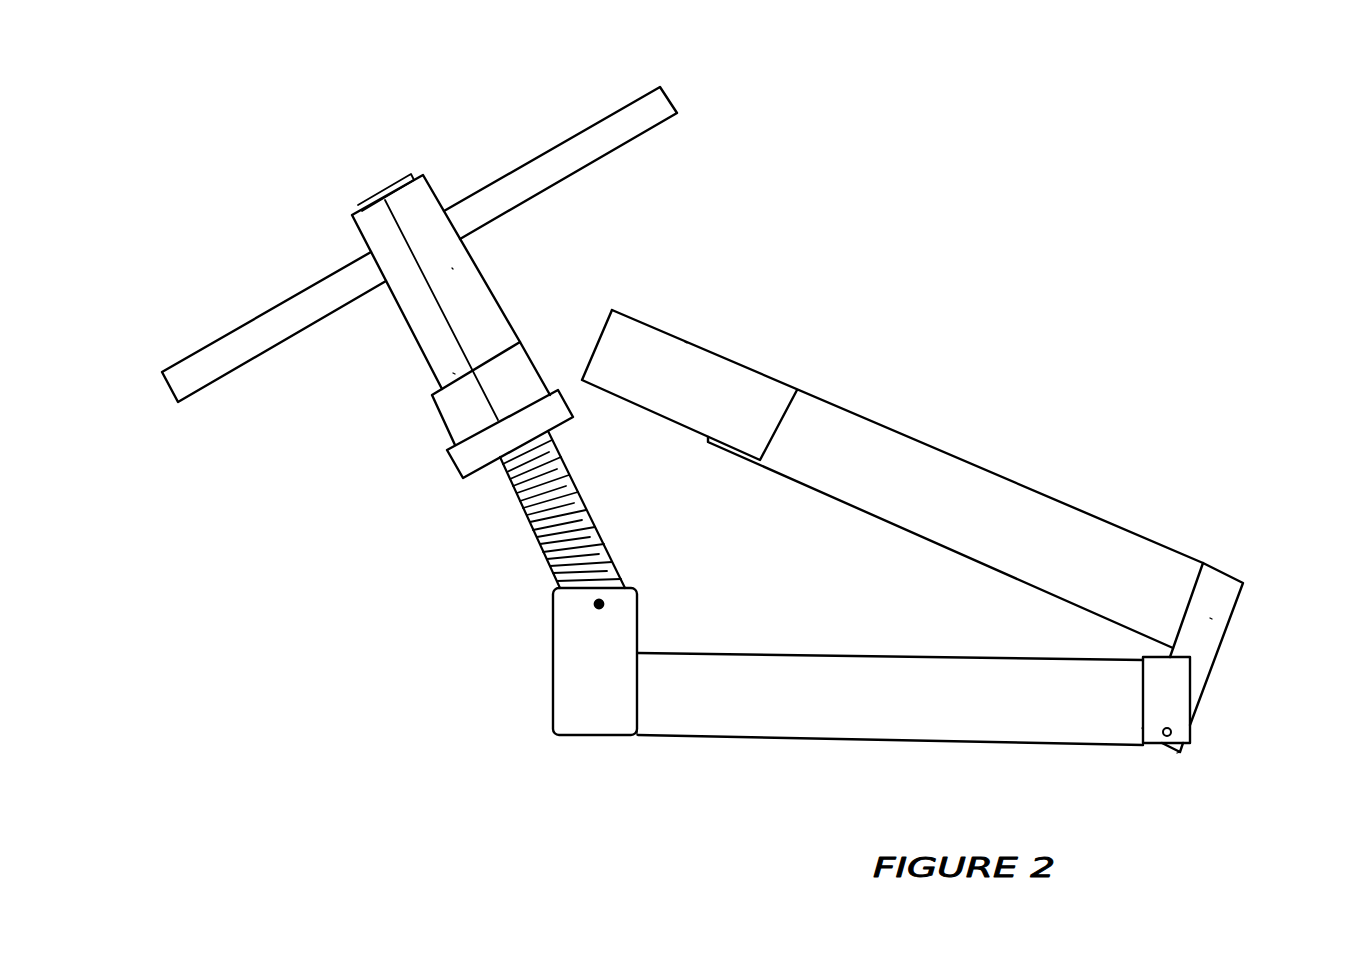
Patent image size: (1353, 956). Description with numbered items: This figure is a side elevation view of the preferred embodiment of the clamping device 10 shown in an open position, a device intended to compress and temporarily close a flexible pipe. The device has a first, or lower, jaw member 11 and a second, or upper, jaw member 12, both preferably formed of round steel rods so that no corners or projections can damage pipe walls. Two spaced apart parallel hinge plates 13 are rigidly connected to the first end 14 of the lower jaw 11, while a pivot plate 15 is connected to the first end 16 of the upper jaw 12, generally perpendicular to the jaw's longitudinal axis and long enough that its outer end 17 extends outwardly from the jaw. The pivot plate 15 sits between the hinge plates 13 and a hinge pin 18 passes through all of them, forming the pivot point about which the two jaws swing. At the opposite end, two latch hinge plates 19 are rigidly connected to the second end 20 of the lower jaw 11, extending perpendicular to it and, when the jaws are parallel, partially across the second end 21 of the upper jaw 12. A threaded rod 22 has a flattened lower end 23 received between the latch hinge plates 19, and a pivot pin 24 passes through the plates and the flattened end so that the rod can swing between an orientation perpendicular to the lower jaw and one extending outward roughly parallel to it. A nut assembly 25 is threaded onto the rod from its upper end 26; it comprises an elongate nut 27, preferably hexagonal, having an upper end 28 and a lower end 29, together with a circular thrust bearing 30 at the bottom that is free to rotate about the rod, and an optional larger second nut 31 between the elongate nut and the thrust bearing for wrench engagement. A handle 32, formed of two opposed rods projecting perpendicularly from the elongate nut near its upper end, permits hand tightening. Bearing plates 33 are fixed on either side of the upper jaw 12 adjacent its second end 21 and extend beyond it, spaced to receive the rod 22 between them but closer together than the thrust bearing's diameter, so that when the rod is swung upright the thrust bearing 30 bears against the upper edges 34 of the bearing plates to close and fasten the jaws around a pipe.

The clamping device 10 is at (827, 247).
The lower jaw member 11 is at (790, 722).
The upper jaw member 12 is at (1050, 520).
The hinge plates 13 is at (1173, 688).
The first end of lower jaw 14 is at (1142, 728).
The pivot plate 15 is at (1210, 620).
The first end of upper jaw 16 is at (1202, 583).
The outer end of pivot plate 17 is at (1177, 753).
The hinge pin 18 is at (1175, 731).
The latch hinge plates 19 is at (573, 685).
The second end of lower jaw 20 is at (637, 713).
The second end of upper jaw 21 is at (708, 442).
The threaded rod 22 is at (528, 514).
The flattened lower end of threaded rod 23 is at (620, 580).
The pivot pin 24 is at (595, 604).
The nut assembly 25 is at (420, 381).
The upper end of threaded rod 26 is at (404, 177).
The elongate nut 27 is at (452, 268).
The upper end of elongate nut 28 is at (362, 206).
The lower end of elongate nut 29 is at (455, 373).
The thrust bearing 30 is at (472, 458).
The second nut 31 is at (520, 373).
The handle 32 is at (253, 337).
The bearing plates 33 is at (752, 388).
The upper edges of bearing plates 34 is at (685, 342).